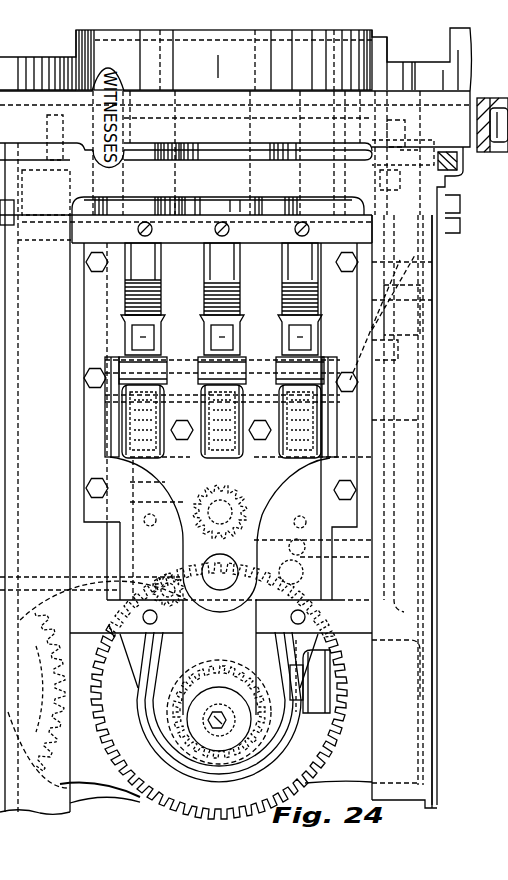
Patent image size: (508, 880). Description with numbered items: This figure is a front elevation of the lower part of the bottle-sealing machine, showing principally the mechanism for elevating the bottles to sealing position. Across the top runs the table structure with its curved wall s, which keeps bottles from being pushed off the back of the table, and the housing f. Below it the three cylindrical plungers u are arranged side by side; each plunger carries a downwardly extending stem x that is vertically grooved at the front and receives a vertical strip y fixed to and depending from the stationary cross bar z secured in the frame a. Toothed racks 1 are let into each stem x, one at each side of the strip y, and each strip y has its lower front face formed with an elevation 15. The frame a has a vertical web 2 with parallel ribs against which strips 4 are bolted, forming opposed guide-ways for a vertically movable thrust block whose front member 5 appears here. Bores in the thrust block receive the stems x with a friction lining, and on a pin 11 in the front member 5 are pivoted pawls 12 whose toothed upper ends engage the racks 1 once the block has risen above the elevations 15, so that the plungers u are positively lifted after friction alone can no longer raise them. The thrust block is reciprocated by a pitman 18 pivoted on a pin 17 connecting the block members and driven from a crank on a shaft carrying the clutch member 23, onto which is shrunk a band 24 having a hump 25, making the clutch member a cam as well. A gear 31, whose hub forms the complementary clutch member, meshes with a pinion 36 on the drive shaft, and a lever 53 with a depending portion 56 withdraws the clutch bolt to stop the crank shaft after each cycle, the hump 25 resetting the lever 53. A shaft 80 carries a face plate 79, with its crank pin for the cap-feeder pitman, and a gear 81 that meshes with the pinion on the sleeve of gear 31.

The curved wall s is at (36, 68).
The upper shaft housing f is at (222, 55).
The cylindrical plunger u is at (221, 205).
The cross bar z is at (82, 236).
The stem x is at (202, 263).
The vertical strip y is at (297, 266).
The toothed rack 1 is at (158, 296).
The elevation 15 is at (218, 308).
The pawl 12 is at (232, 344).
The pin 11 is at (103, 370).
The strip 4 is at (221, 477).
The pinion 36 is at (300, 466).
The front member of thrust block 5 is at (246, 488).
The pin 17 is at (246, 572).
The pitman 18 is at (231, 620).
The vertical web 2 is at (361, 618).
The lever 53 is at (337, 640).
The depending portion 56 is at (319, 707).
The clutch member 23 is at (274, 727).
The band 24 is at (266, 740).
The hump 25 is at (243, 772).
The gear 31 is at (326, 743).
The shaft 80 is at (106, 735).
The gear 81 is at (102, 766).
The face plate 79 is at (103, 796).
The frame a is at (432, 424).